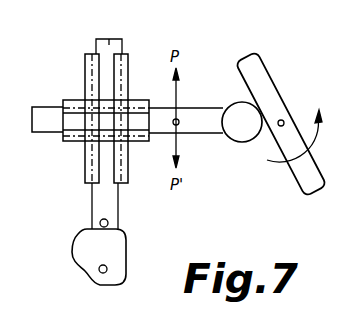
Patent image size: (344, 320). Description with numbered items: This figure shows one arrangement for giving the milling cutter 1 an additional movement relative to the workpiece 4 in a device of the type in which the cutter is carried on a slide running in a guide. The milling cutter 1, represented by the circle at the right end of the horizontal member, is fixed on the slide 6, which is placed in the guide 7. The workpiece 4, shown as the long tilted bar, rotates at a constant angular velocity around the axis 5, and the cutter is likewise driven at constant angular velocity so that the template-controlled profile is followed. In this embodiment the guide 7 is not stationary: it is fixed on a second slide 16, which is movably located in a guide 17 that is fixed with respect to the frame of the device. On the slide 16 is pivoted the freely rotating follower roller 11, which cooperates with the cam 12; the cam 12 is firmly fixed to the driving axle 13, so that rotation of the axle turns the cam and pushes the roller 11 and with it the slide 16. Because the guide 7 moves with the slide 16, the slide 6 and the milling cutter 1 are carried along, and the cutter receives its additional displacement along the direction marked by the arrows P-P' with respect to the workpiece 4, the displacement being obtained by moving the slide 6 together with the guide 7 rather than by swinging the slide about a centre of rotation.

The milling cutter 1 is at (248, 139).
The workpiece 4 is at (269, 81).
The axis 5 is at (284, 121).
The slide 6 is at (211, 109).
The guide 7 is at (140, 100).
The follower roller 11 is at (108, 223).
The cam 12 is at (124, 264).
The driving axle 13 is at (100, 272).
The slide 16 is at (103, 101).
The guide 17 is at (128, 70).